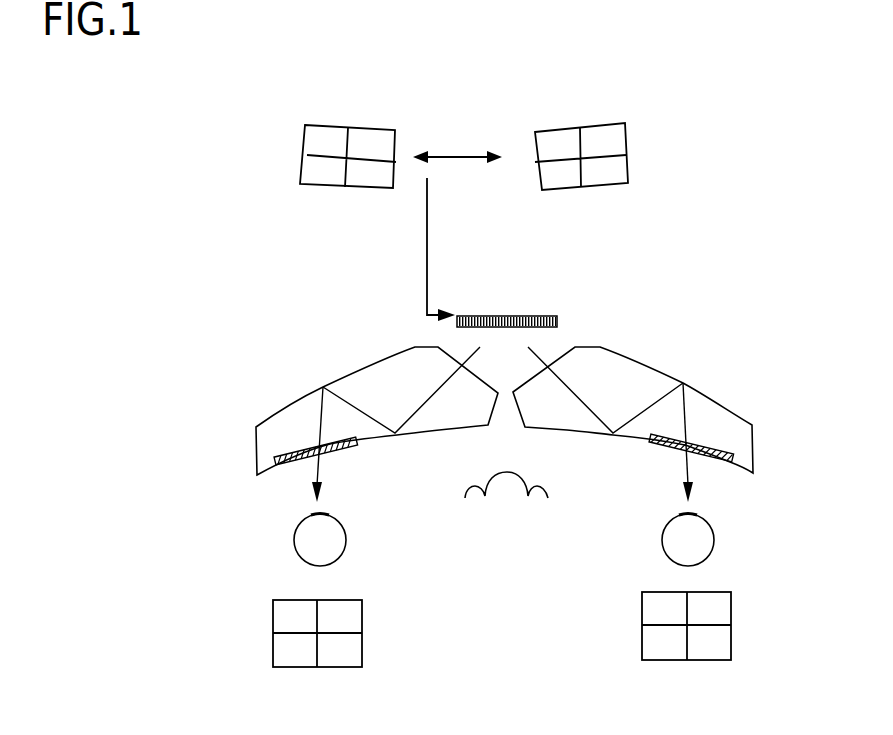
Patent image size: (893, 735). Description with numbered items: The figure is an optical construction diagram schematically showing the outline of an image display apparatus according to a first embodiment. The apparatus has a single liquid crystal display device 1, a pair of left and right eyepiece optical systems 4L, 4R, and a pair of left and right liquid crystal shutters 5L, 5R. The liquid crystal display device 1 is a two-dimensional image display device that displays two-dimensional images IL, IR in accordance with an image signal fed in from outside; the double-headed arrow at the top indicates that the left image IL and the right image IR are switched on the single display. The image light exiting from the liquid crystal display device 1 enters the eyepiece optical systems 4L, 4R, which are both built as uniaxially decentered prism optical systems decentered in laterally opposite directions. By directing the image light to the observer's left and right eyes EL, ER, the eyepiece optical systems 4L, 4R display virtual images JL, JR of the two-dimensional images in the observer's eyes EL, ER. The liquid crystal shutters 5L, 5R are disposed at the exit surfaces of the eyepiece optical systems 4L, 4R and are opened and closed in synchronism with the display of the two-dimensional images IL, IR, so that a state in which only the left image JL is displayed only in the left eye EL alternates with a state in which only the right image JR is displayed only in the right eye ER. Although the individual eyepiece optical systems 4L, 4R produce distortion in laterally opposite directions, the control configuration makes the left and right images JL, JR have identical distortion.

The left two-dimensional image IL is at (330, 188).
The right two-dimensional image IR is at (597, 189).
The liquid crystal display device 1 is at (557, 321).
The left eyepiece optical system 4L is at (290, 405).
The right eyepiece optical system 4R is at (708, 392).
The left liquid crystal shutter 5L is at (348, 448).
The right liquid crystal shutter 5R is at (667, 446).
The left eye EL is at (293, 538).
The right eye ER is at (715, 535).
The left virtual image JL is at (273, 642).
The right virtual image JR is at (731, 635).